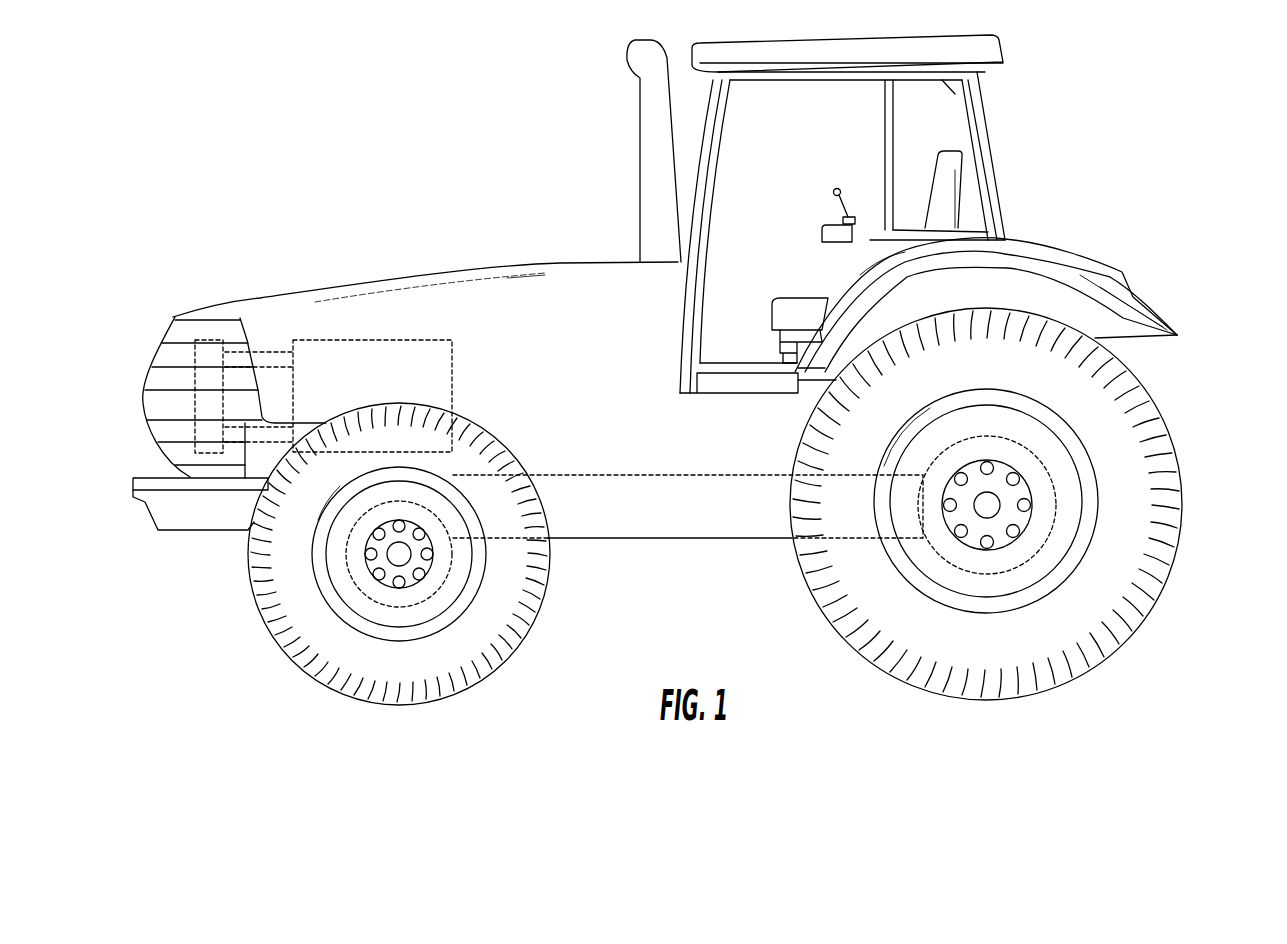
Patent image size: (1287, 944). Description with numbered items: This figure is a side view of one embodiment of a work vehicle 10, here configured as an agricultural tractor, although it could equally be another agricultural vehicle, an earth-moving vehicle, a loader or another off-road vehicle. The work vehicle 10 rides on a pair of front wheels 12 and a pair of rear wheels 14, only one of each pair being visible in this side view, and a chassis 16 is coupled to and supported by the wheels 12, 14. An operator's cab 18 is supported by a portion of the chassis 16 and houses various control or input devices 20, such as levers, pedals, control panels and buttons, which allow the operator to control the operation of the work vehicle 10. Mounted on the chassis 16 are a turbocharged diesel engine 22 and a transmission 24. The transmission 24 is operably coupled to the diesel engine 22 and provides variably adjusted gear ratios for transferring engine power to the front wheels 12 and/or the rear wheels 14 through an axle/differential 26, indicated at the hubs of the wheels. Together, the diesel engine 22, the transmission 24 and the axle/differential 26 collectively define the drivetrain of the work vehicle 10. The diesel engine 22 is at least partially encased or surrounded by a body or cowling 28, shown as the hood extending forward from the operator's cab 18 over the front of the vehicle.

The work vehicle 10 is at (303, 112).
The front wheels 12 is at (285, 654).
The rear wheels 14 is at (1166, 582).
The chassis 16 is at (690, 540).
The operator's cab 18 is at (983, 114).
The control or input devices 20 is at (833, 188).
The diesel engine 22 is at (388, 340).
The transmission 24 is at (660, 474).
The axle/differential 26 is at (393, 607).
The body or cowling 28 is at (573, 258).